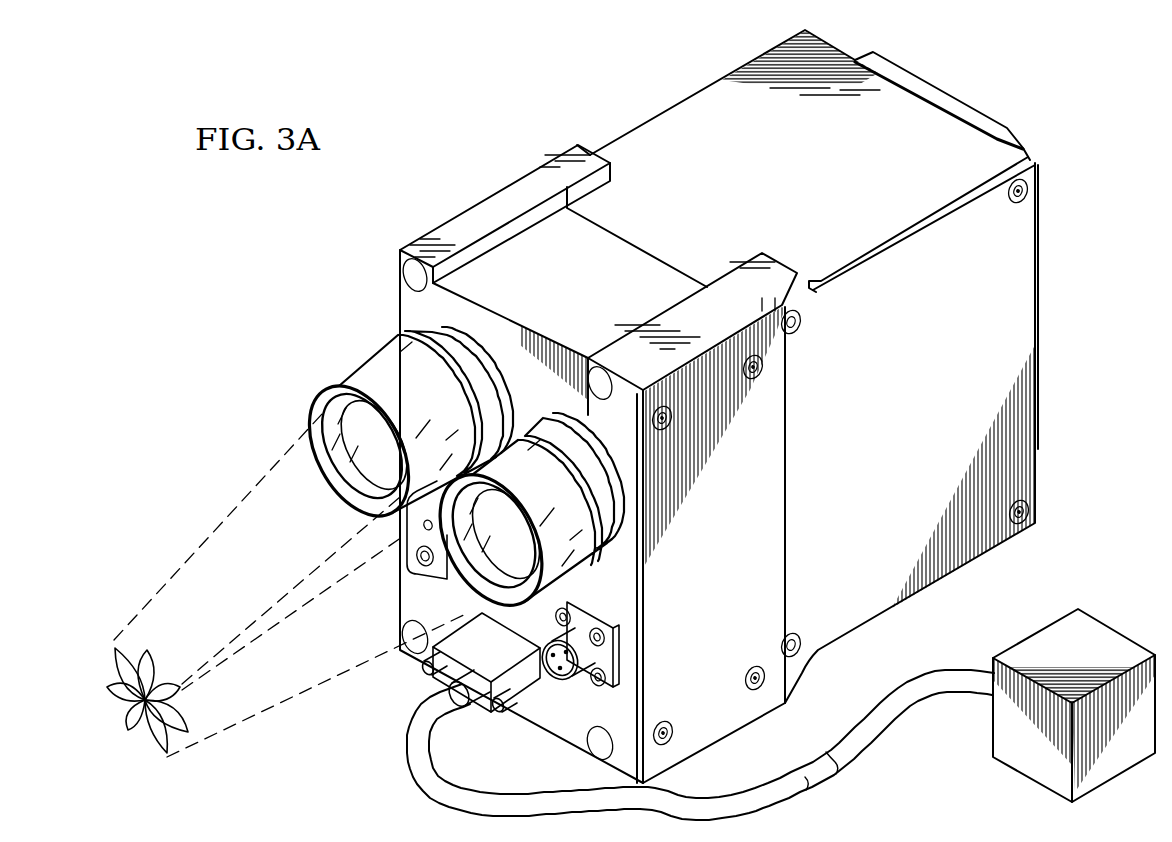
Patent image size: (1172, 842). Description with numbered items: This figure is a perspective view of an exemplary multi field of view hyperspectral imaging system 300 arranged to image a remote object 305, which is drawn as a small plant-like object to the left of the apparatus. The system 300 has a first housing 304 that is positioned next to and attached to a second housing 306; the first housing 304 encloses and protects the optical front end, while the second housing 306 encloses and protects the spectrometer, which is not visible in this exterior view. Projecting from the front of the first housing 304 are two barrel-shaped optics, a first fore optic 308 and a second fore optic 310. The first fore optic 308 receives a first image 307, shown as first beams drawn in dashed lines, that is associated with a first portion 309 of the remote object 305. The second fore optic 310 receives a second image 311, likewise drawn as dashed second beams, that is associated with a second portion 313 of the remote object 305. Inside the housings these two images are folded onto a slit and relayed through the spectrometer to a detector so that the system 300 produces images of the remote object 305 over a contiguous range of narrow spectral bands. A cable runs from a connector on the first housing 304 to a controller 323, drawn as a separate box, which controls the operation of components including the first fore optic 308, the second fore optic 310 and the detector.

The multi field of view hyperspectral imaging system 300 is at (1004, 84).
The first housing 304 is at (452, 217).
The second housing 306 is at (694, 94).
The first fore optic 308 is at (349, 369).
The second fore optic 310 is at (524, 452).
The first image 307 is at (196, 548).
The second image 311 is at (345, 672).
The remote object 305 is at (126, 732).
The first portion of the remote object 309 is at (113, 707).
The second portion of the remote object 313 is at (157, 755).
The controller 323 is at (1112, 636).